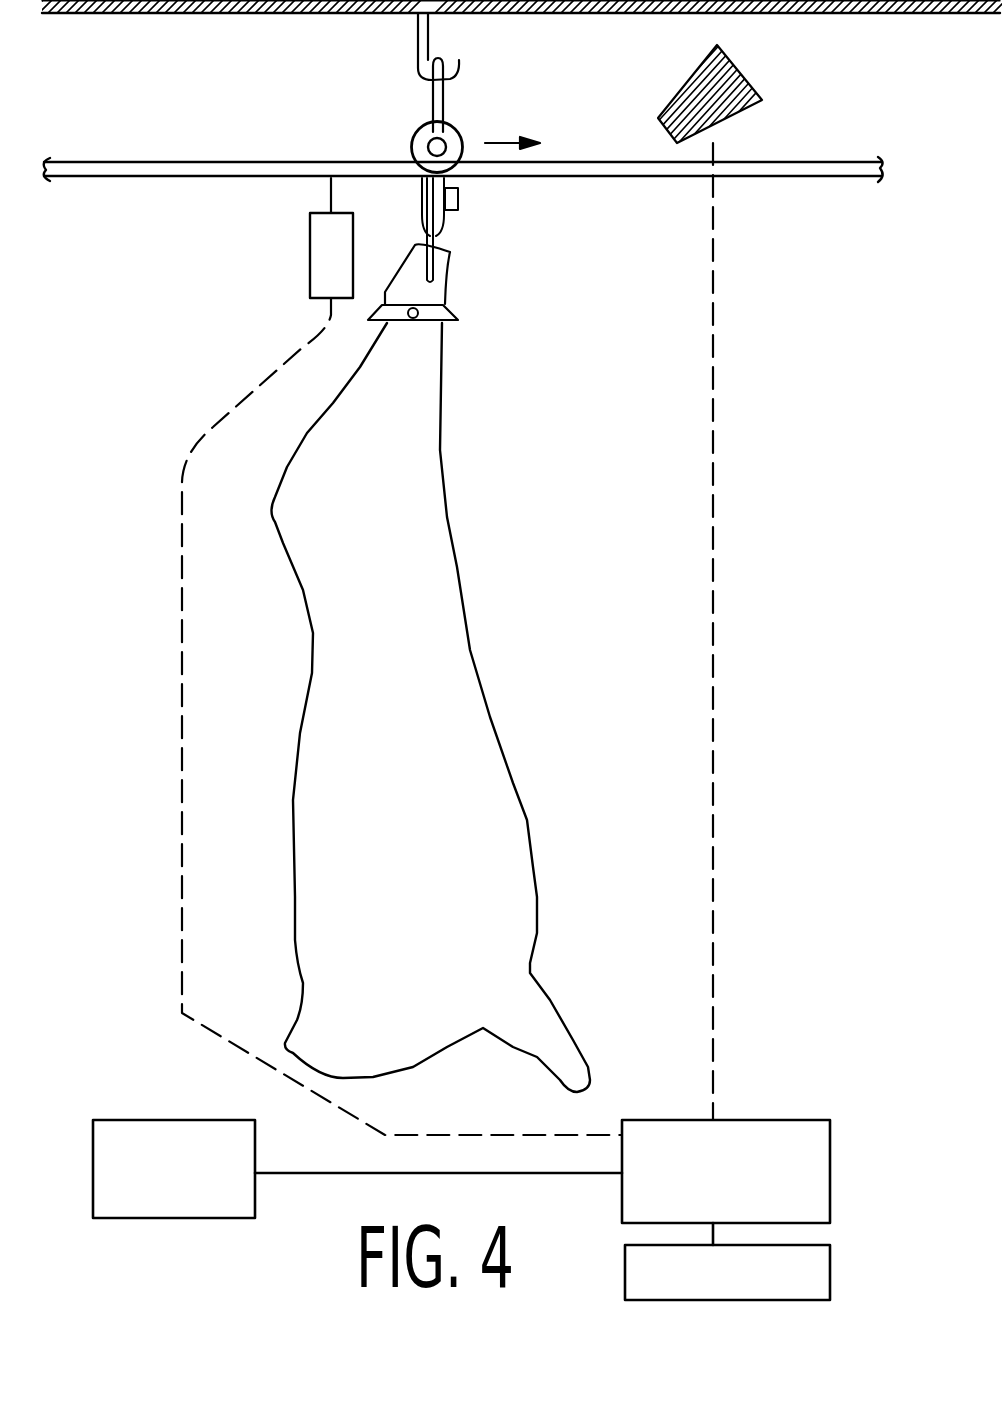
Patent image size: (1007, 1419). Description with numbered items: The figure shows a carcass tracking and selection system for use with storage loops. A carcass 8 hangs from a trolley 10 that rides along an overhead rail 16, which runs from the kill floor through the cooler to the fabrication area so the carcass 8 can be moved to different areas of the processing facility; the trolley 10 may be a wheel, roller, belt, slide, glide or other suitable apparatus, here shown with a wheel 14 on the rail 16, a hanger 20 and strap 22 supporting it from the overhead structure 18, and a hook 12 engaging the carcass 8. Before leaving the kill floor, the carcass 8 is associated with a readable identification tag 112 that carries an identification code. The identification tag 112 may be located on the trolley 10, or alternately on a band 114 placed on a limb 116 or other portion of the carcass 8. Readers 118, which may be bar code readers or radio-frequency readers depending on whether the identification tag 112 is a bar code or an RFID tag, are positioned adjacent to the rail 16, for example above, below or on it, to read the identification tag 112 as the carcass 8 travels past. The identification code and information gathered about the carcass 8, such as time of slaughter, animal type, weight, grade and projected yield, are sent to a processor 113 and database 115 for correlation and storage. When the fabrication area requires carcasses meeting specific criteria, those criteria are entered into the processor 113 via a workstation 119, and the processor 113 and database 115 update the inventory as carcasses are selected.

The carcass 8 is at (493, 820).
The trolley 10 is at (488, 113).
The hook 12 is at (438, 237).
The wheel 14 is at (418, 136).
The rail 16 is at (806, 168).
The ceiling support 18 is at (806, 15).
The hanger 20 is at (432, 38).
The strap 22 is at (446, 95).
The identification tag 112 is at (462, 198).
The processor 113 is at (720, 1185).
The band 114 is at (440, 312).
The database 115 is at (727, 1261).
The limb 116 is at (430, 290).
The reader 118 is at (310, 244).
The workstation 119 is at (170, 1188).